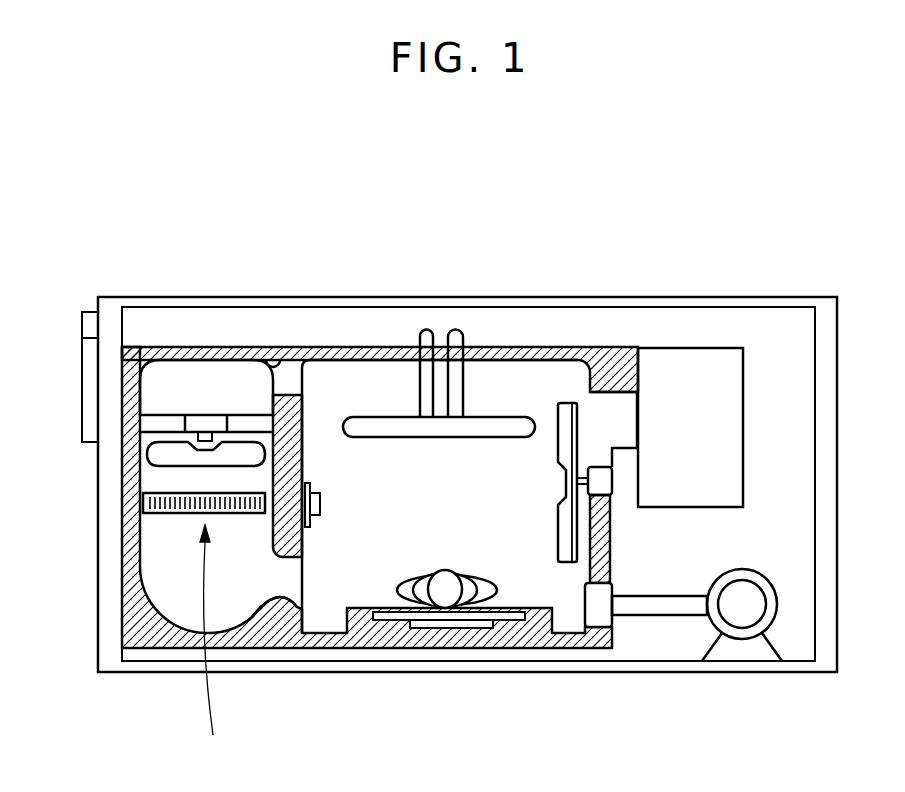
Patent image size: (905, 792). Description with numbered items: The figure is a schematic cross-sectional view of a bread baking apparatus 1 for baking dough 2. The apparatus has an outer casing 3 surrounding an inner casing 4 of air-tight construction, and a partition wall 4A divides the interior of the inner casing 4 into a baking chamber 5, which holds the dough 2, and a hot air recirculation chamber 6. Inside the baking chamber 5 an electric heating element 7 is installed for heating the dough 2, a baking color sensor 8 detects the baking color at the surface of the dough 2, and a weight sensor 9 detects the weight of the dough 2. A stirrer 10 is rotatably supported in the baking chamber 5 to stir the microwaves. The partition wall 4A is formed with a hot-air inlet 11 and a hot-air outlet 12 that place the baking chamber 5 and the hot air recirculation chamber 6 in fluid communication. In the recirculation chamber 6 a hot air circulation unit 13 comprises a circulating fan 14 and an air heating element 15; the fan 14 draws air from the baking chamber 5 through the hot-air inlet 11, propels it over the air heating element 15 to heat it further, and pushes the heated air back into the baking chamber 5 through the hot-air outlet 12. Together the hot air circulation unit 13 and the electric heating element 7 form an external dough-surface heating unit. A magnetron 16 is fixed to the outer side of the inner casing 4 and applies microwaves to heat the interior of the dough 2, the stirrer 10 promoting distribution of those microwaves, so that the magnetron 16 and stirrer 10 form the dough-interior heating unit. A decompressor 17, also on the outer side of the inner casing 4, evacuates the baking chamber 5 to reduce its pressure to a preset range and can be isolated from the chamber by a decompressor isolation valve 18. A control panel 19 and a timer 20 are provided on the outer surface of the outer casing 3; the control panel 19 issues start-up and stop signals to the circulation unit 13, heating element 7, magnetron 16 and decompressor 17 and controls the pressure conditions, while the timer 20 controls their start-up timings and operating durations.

The baking apparatus 1 is at (437, 268).
The dough 2 is at (503, 630).
The outer casing 3 is at (314, 345).
The inner casing 4 is at (537, 352).
The partition wall 4A is at (288, 455).
The baking chamber 5 is at (545, 573).
The hot air recirculation chamber 6 is at (208, 378).
The electric heating element 7 is at (380, 416).
The baking color sensor 8 is at (318, 515).
The weight sensor 9 is at (463, 613).
The stirrer 10 is at (568, 412).
The hot-air inlet 11 is at (276, 365).
The hot-air outlet 12 is at (262, 600).
The hot air circulation unit 13 is at (217, 645).
The circulating fan 14 is at (165, 455).
The air heating element 15 is at (183, 513).
The magnetron 16 is at (677, 370).
The decompressor 17 is at (740, 612).
The decompressor isolation valve 18 is at (598, 600).
The control panel 19 is at (84, 430).
The timer 20 is at (96, 320).